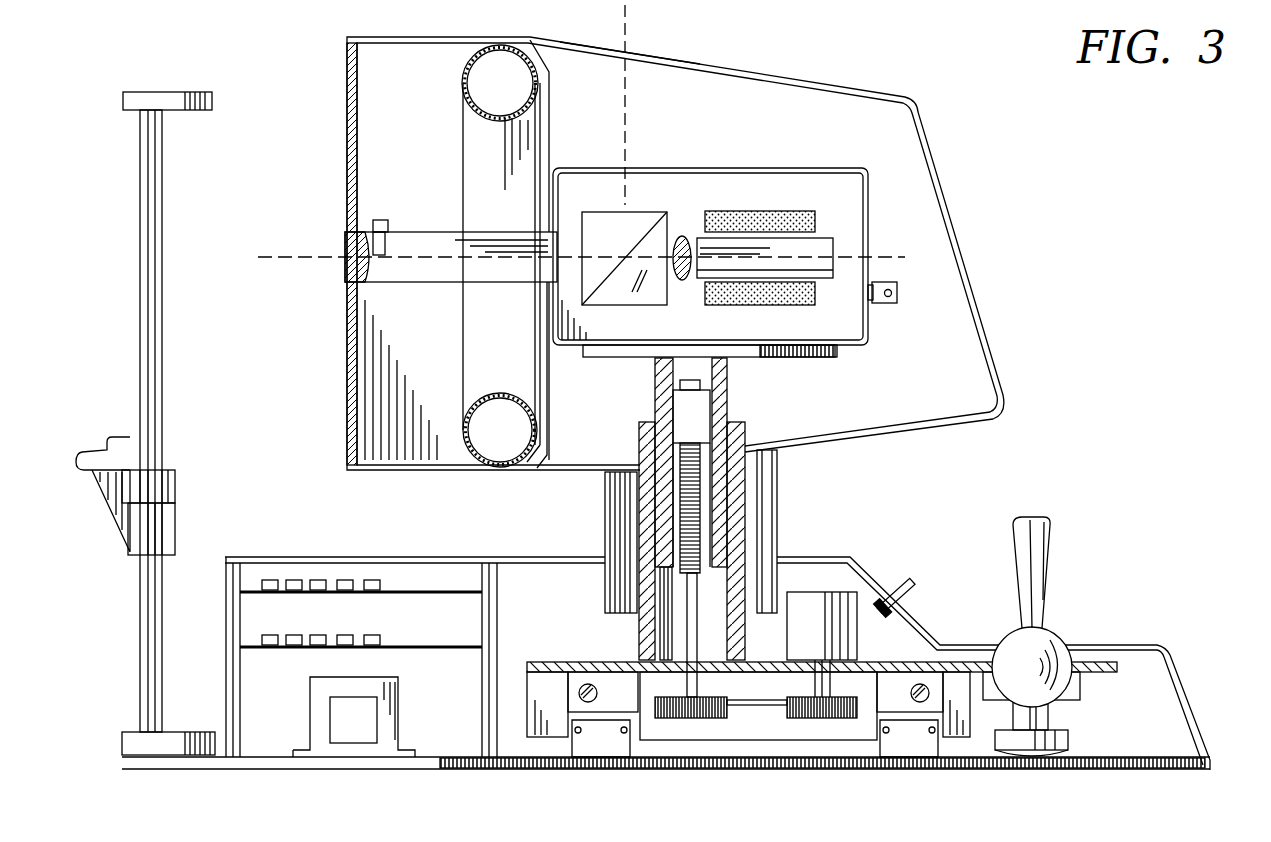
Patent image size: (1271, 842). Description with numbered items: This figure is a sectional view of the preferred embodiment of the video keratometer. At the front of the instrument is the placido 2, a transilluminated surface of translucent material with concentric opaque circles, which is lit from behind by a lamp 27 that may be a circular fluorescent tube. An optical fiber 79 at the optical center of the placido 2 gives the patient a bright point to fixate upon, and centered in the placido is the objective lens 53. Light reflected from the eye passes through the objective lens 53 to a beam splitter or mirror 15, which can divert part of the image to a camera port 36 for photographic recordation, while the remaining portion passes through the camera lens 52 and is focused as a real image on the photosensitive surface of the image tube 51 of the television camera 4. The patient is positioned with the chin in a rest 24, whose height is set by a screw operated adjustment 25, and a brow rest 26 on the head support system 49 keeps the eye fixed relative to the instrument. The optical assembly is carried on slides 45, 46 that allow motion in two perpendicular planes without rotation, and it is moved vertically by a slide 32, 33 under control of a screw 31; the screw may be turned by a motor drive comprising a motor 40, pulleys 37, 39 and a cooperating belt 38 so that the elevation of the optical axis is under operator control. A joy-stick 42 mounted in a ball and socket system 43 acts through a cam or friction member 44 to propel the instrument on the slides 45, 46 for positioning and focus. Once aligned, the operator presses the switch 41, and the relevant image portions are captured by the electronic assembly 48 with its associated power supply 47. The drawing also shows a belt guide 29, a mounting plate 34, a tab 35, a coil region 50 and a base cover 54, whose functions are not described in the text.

The placido 2 is at (348, 125).
The television camera 4 is at (725, 168).
The beam splitter or mirror 15 is at (613, 212).
The chin rest 24 is at (100, 440).
The adjustment 25 is at (176, 492).
The brow rest 26 is at (130, 92).
The lamp 27 is at (463, 345).
The belt guide 29 is at (549, 420).
The screw 31 is at (690, 518).
The slide 32 is at (746, 424).
The slide 33 is at (730, 396).
The mounting plate 34 is at (840, 357).
The mounting tab 35 is at (890, 304).
The camera port 36 is at (648, 54).
The pulley 37 is at (690, 718).
The belt 38 is at (772, 705).
The pulley 39 is at (820, 718).
The motor 40 is at (808, 604).
The switch 41 is at (902, 584).
The joy-stick 42 is at (1046, 526).
The ball and socket system 43 is at (1072, 680).
The cam or friction member 44 is at (1068, 745).
The slide 45 is at (916, 740).
The slide 46 is at (545, 682).
The power supply 47 is at (352, 718).
The electronic assembly 48 is at (378, 636).
The head support system 49 is at (122, 740).
The coil 50 is at (778, 212).
The image tube 51 is at (822, 280).
The camera lens 52 is at (685, 236).
The objective lens 53 is at (345, 262).
The base cover 54 is at (1125, 645).
The optical fiber 79 is at (386, 243).